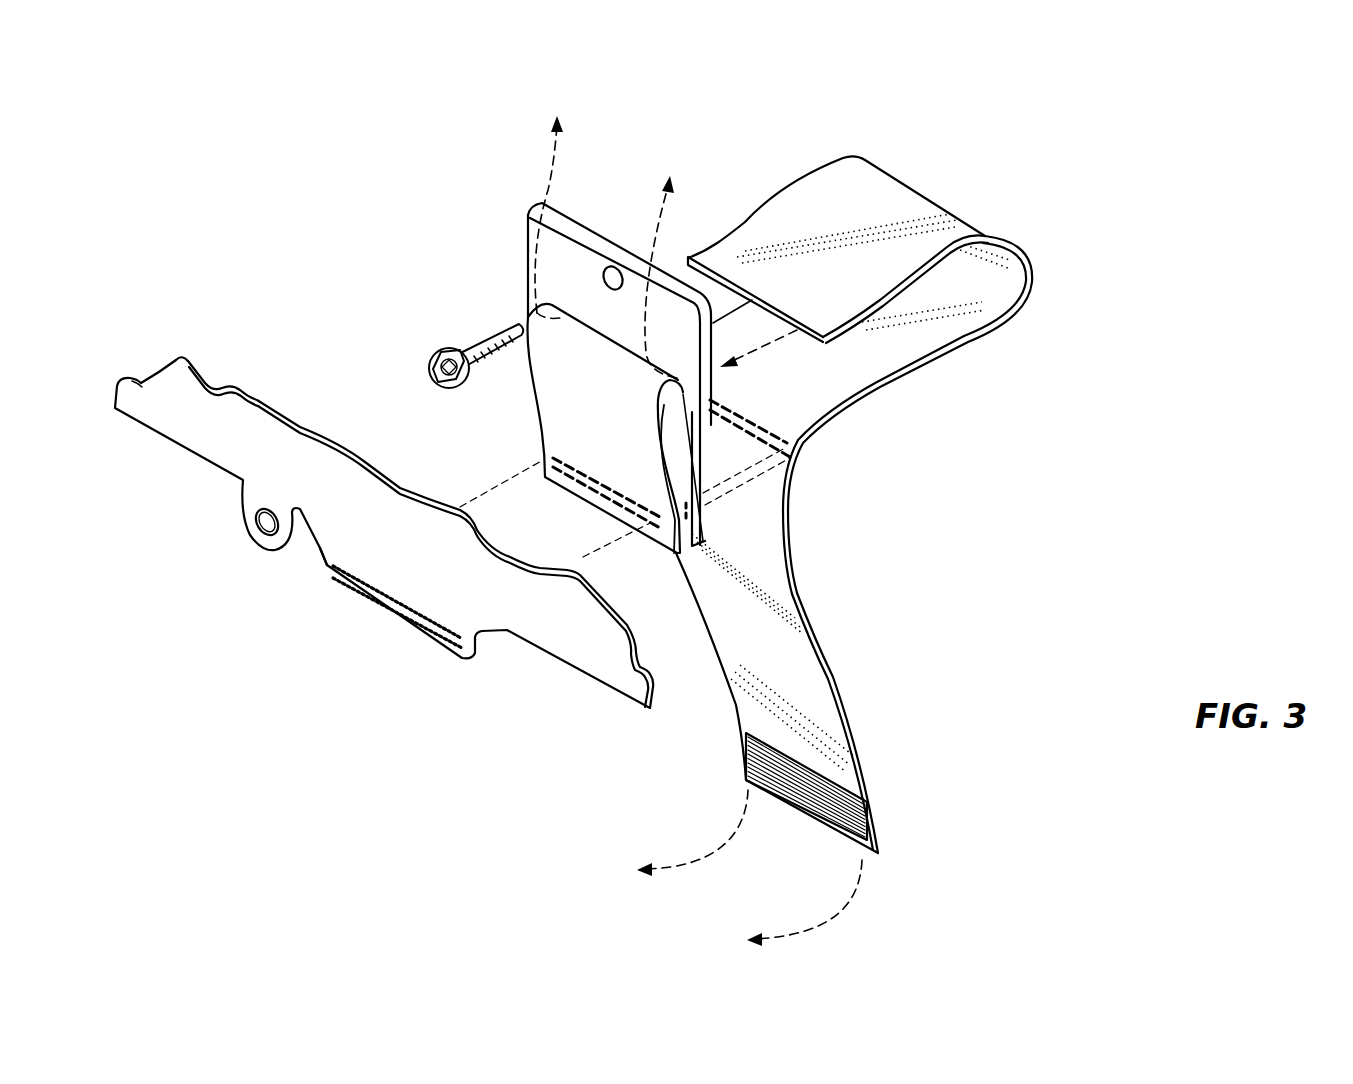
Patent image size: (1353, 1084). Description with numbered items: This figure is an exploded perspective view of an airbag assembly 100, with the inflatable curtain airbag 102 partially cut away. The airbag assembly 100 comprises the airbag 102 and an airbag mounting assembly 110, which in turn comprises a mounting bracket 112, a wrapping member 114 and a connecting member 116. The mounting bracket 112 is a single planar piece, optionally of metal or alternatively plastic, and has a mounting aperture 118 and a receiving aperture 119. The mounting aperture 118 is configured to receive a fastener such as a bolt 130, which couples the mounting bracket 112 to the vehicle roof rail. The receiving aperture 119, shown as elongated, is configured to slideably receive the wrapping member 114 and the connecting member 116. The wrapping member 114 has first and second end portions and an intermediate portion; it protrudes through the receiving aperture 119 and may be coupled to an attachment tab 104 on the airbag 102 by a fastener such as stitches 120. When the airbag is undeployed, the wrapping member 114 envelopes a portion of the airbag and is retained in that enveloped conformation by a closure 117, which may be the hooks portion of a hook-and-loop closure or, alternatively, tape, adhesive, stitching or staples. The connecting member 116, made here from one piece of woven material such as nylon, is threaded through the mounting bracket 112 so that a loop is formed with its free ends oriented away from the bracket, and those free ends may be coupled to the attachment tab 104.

The airbag assembly 100 is at (1138, 246).
The airbag 102 is at (233, 450).
The attachment tab 104 is at (320, 567).
The airbag mounting assembly 110 is at (450, 265).
The mounting bracket 112 is at (527, 243).
The wrapping member 114 is at (895, 200).
The connecting member 116 is at (553, 437).
The closure 117 is at (820, 783).
The mounting aperture 118 is at (610, 268).
The receiving aperture 119 is at (690, 438).
The stitches 120 is at (440, 637).
The bolt 130 is at (450, 347).